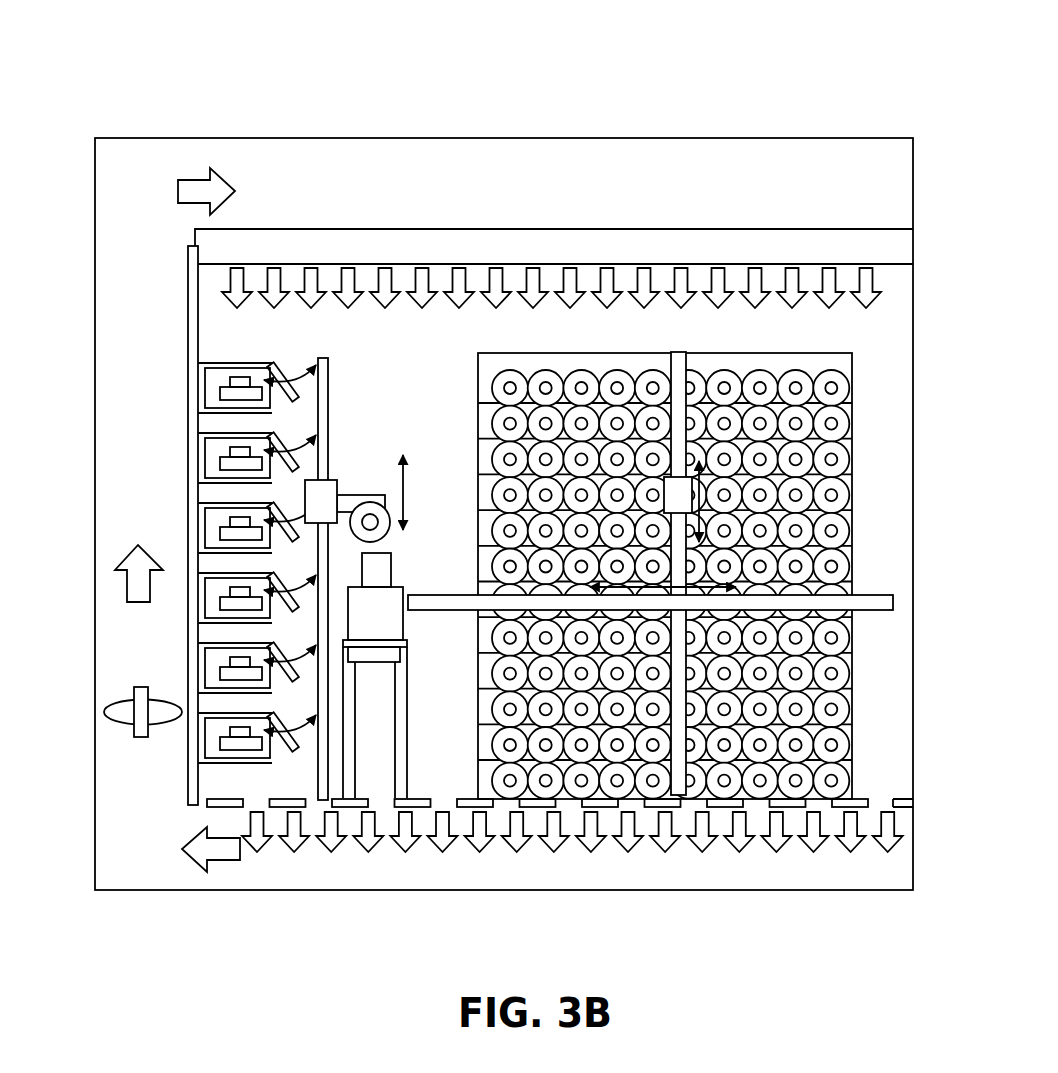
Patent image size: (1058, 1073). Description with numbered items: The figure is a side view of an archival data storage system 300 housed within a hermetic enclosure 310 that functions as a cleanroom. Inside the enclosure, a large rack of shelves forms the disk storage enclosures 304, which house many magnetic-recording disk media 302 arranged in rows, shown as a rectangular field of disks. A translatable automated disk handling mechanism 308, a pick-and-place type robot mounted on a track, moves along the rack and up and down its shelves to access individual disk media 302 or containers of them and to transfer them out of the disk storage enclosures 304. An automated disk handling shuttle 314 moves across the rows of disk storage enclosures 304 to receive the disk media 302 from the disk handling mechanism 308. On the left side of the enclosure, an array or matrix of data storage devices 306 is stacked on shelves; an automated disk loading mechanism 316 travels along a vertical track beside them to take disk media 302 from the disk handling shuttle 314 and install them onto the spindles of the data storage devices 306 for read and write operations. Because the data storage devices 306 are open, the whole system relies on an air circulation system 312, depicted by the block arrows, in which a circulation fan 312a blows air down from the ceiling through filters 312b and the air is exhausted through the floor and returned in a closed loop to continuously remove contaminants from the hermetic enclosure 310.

The data storage system 300 is at (236, 67).
The magnetic-recording disk media 302 is at (880, 352).
The disk storage enclosures 304 is at (834, 353).
The data storage devices 306 is at (195, 765).
The automated disk handling mechanism 308 is at (692, 494).
The hermetic enclosure 310 is at (838, 138).
The air/gas circulation system 312 is at (197, 190).
The circulation fan 312a is at (127, 710).
The filter 312b is at (430, 243).
The automated disk handling shuttle 314 is at (387, 603).
The automated disk loading mechanism 316 is at (325, 485).